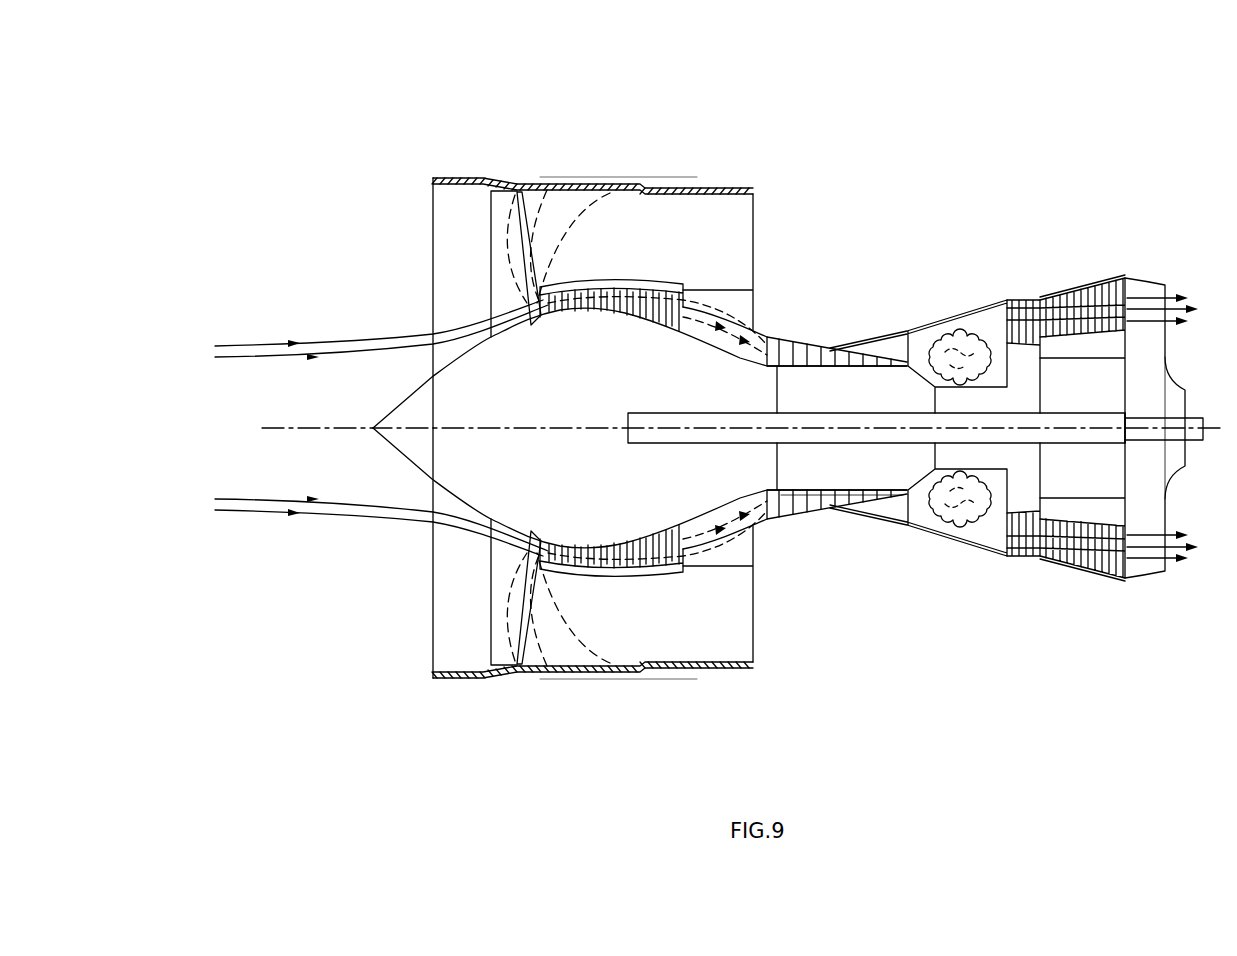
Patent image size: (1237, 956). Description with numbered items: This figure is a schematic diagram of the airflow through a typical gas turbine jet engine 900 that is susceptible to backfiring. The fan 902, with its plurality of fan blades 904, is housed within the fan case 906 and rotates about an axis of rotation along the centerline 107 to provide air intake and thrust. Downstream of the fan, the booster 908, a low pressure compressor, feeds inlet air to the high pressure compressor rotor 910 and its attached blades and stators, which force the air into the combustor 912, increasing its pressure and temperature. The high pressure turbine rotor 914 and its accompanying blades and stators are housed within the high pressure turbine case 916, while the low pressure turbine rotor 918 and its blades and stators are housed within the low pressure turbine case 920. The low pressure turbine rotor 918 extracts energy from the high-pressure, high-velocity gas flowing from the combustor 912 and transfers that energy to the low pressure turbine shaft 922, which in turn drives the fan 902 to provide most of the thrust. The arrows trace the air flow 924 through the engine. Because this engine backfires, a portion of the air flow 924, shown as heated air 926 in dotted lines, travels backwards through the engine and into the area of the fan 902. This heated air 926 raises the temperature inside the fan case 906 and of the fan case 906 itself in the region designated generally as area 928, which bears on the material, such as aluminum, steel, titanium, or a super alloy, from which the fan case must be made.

The gas turbine jet engine 900 is at (872, 217).
The fan 902 is at (413, 462).
The fan blades 904 is at (490, 245).
The fan case 906 is at (462, 178).
The booster 908 is at (612, 278).
The high pressure compressor rotor 910 is at (806, 348).
The combustor 912 is at (955, 345).
The high pressure turbine rotor 914 is at (973, 470).
The high pressure turbine case 916 is at (1040, 290).
The low pressure turbine rotor 918 is at (1108, 496).
The low pressure turbine case 920 is at (1125, 275).
The low pressure turbine shaft 922 is at (822, 462).
The air flow 924 is at (704, 428).
The heated air 926 is at (558, 428).
The area 928 is at (697, 181).
The centerline 107 is at (286, 433).